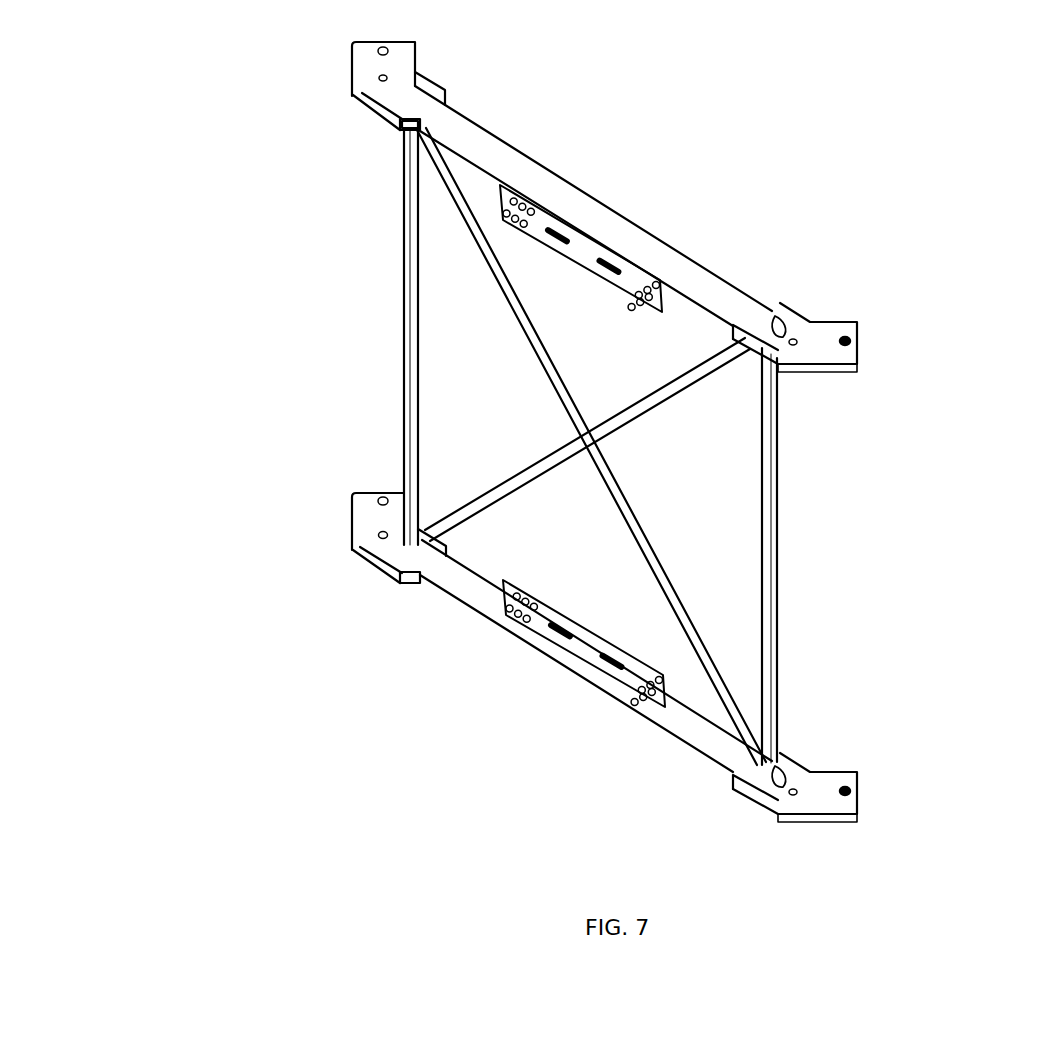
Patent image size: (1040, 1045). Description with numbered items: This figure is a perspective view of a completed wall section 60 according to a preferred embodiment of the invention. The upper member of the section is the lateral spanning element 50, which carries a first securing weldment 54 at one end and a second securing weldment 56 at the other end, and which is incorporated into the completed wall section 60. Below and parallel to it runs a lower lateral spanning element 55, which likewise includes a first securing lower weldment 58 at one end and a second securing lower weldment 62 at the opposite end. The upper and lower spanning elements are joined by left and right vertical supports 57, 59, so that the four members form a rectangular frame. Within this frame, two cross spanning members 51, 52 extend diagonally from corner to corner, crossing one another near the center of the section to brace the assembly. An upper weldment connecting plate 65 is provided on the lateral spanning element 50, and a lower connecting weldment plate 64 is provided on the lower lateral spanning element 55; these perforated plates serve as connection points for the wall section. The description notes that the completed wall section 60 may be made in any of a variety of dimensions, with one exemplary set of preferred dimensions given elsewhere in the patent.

The lateral spanning element 50 is at (634, 225).
The cross spanning member 51 is at (462, 216).
The cross spanning member 52 is at (680, 398).
The first securing weldment 54 is at (380, 83).
The lower lateral spanning element 55 is at (478, 591).
The second securing weldment 56 is at (843, 333).
The left vertical support 57 is at (406, 364).
The first securing lower weldment 58 is at (353, 550).
The right vertical support 59 is at (777, 517).
The completed wall section 60 is at (663, 91).
The second securing lower weldment 62 is at (840, 775).
The lower connecting weldment plate 64 is at (535, 652).
The upper weldment connecting plate 65 is at (542, 200).